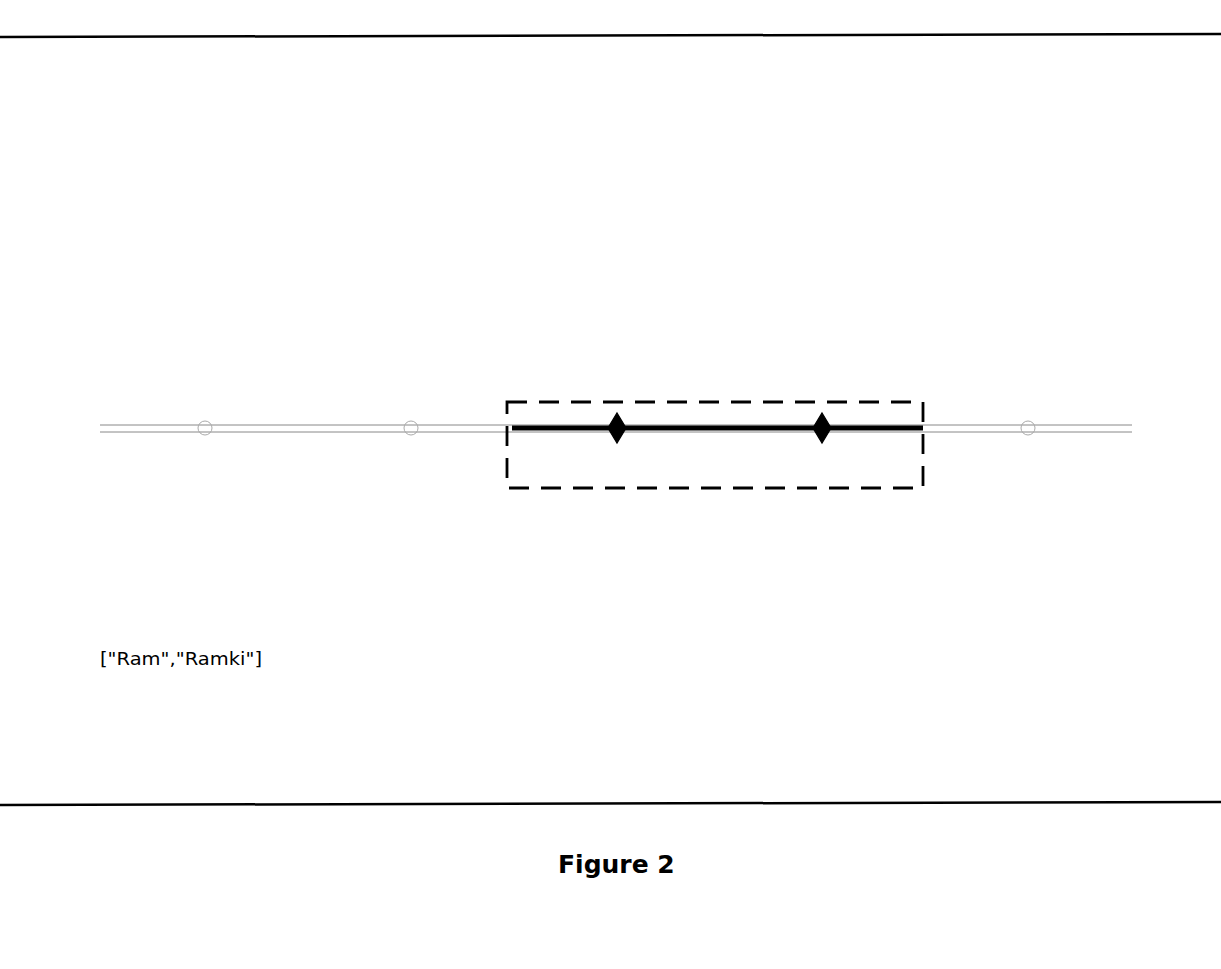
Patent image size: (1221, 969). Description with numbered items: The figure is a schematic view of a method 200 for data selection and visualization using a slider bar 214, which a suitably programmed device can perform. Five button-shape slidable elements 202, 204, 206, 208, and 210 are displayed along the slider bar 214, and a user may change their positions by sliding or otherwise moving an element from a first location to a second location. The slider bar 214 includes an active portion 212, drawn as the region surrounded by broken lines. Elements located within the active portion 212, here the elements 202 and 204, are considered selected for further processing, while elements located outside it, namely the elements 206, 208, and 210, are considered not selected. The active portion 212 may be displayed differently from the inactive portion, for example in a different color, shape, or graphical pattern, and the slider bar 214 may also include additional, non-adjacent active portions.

The method for data selection and visualization using a slider bar 200 is at (702, 200).
The button-shape slidable element 202 is at (618, 411).
The button-shape slidable element 204 is at (823, 411).
The button-shape slidable element 206 is at (214, 433).
The button-shape slidable element 208 is at (418, 433).
The button-shape slidable element 210 is at (1028, 412).
The active portion 212 is at (636, 490).
The slider bar 214 is at (110, 434).